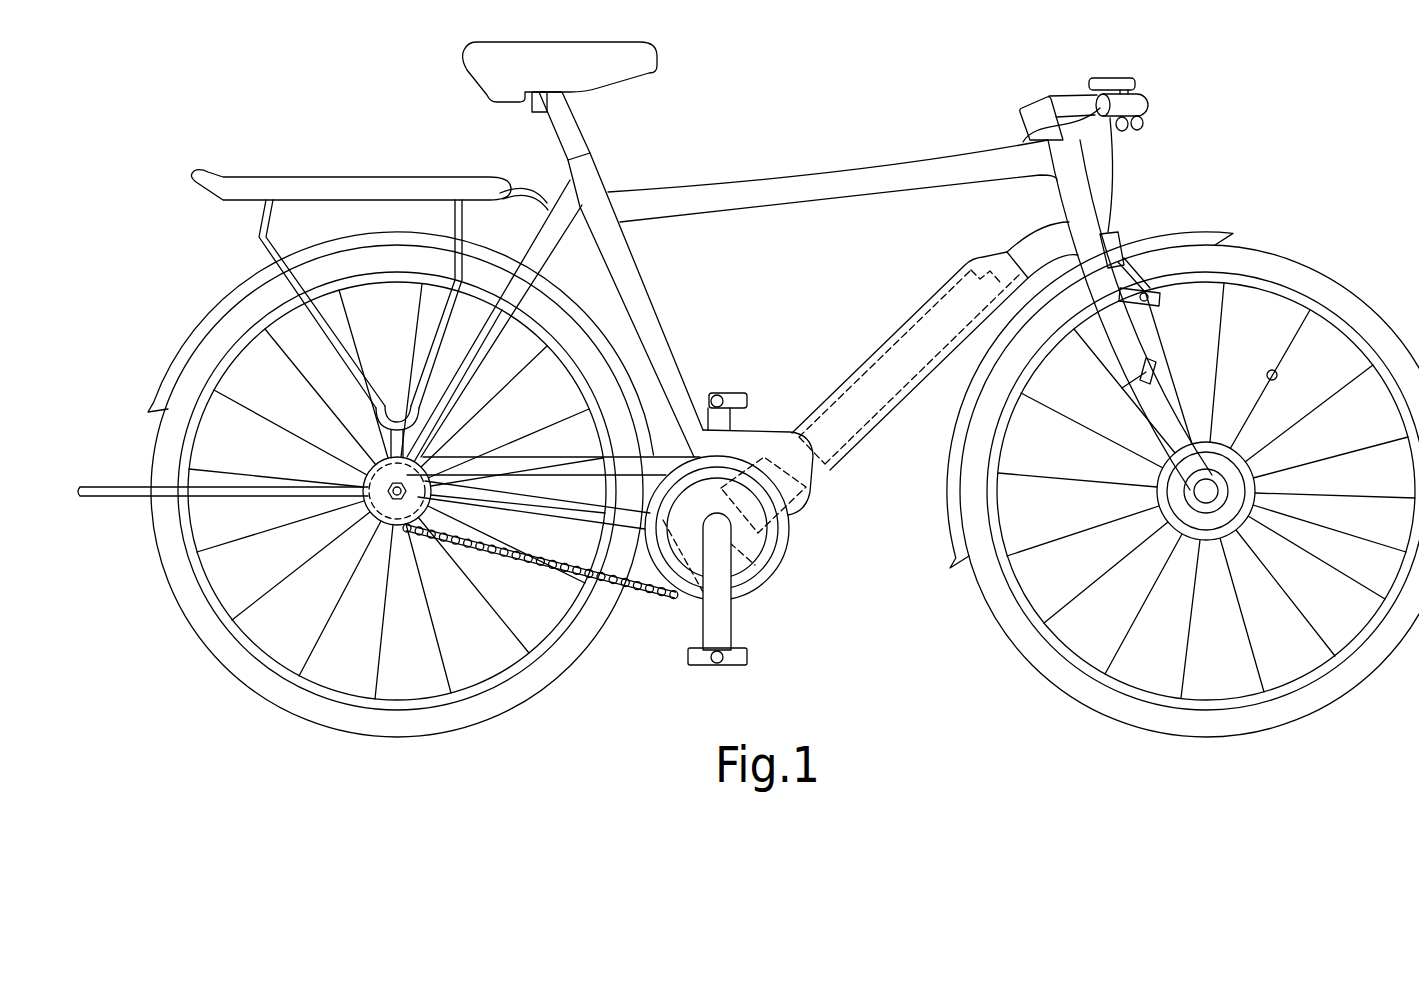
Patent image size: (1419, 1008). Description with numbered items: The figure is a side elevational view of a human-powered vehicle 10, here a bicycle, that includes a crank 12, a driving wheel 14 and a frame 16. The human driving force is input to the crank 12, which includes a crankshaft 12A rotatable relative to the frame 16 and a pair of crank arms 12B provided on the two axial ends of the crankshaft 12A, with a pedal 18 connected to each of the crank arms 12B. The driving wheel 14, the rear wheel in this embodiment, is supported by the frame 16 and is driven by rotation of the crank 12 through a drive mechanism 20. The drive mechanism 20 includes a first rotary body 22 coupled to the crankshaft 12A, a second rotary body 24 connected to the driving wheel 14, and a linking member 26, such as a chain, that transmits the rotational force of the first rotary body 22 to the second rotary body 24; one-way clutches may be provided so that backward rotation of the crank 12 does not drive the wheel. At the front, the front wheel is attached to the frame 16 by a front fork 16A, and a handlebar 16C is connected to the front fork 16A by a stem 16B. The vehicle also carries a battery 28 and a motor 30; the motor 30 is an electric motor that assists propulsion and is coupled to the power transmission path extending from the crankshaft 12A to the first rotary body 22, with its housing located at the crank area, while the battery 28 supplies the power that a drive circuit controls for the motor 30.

The human-powered vehicle 10 is at (1306, 90).
The crank 12 is at (865, 558).
The crankshaft 12A is at (731, 533).
The crank arms 12B is at (724, 625).
The driving wheel 14 is at (158, 448).
The frame 16 is at (752, 185).
The front fork 16A is at (1122, 342).
The stem 16B is at (1038, 117).
The handlebar 16C is at (1146, 106).
The pedal 18 is at (740, 392).
The drive mechanism 20 is at (859, 647).
The first rotary body 22 is at (790, 545).
The second rotary body 24 is at (352, 508).
The linking member 26 is at (638, 590).
The battery 28 is at (898, 340).
The motor 30 is at (812, 492).